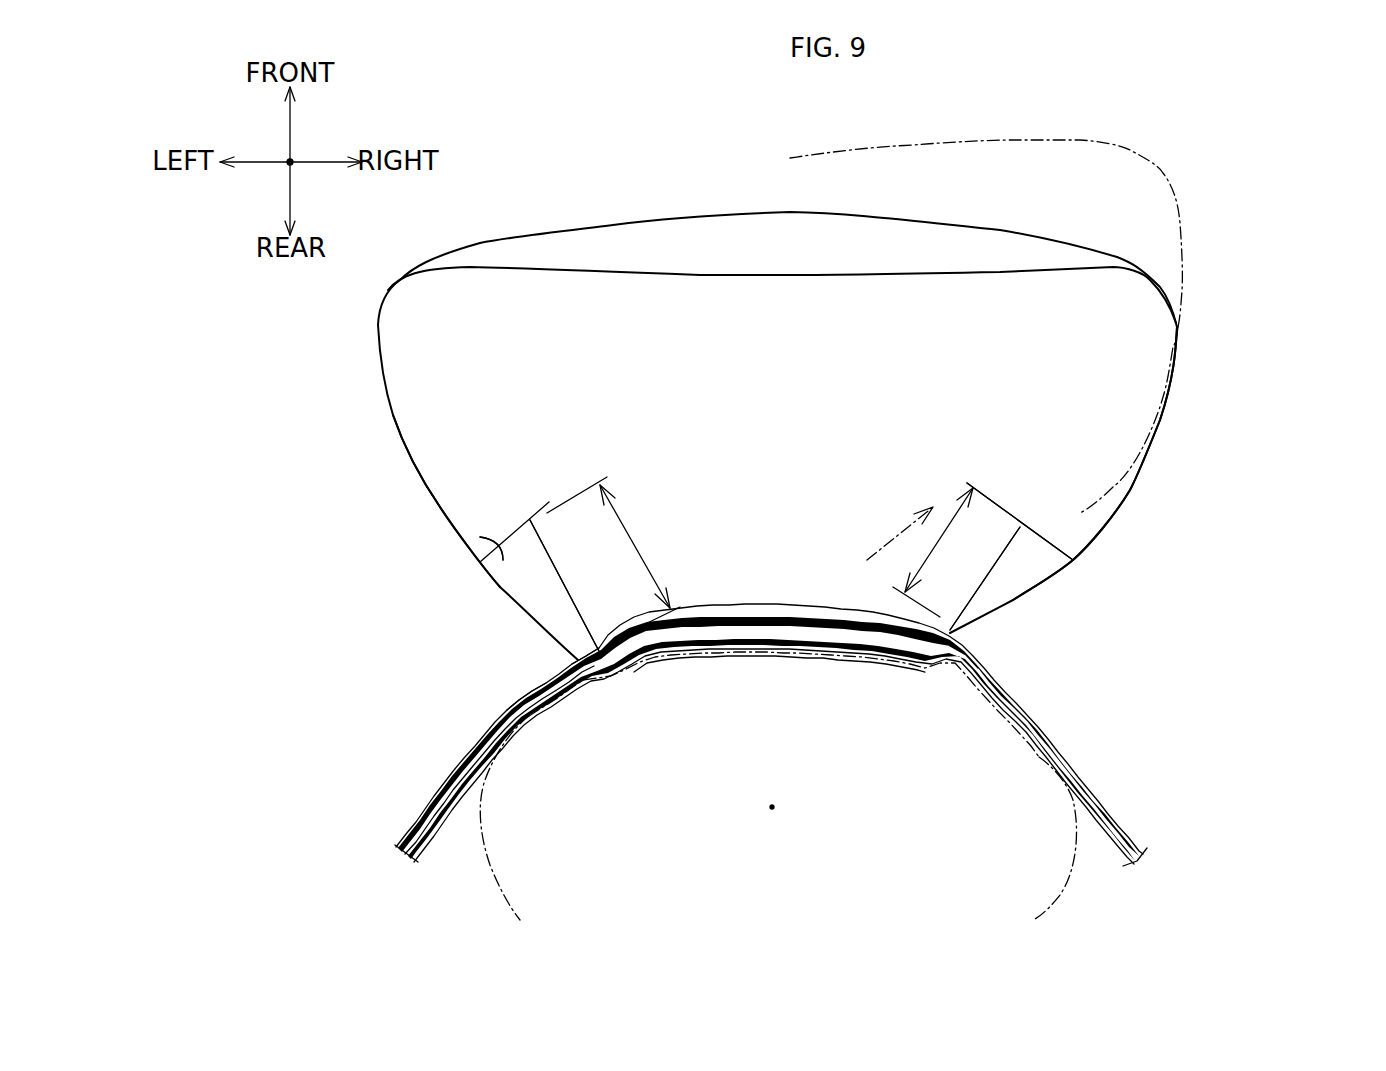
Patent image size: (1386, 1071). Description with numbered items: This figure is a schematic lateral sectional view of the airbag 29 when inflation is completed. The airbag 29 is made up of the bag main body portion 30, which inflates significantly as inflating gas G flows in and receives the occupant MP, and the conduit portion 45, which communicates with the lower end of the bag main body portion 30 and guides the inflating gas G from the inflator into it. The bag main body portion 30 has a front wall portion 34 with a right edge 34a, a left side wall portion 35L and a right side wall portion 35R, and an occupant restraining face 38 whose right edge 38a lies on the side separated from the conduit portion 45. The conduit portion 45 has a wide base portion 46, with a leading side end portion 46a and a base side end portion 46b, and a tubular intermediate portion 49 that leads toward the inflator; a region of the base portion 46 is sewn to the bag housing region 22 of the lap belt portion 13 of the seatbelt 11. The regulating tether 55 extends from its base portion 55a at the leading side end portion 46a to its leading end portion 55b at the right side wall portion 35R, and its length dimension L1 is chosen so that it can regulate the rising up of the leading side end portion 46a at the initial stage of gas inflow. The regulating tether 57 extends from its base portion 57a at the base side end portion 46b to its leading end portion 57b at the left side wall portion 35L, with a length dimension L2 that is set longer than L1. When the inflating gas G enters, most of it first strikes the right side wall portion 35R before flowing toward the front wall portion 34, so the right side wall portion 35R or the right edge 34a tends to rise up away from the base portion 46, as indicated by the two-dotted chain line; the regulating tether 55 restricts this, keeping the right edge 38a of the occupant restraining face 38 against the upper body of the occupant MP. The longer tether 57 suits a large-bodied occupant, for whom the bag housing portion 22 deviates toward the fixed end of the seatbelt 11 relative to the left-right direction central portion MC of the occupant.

The airbag 29 is at (578, 152).
The conduit portion 45 is at (700, 597).
The bag main body portion 30 is at (708, 213).
The occupant restraining face 38 is at (785, 482).
The front wall portion 34 is at (943, 217).
The right edge of the front wall portion 34a is at (1177, 167).
The right side wall portion 35R is at (1185, 284).
The left side wall portion 35L is at (367, 415).
The right edge of the occupant restraining face 38a is at (1133, 333).
The regulating tether 57 is at (540, 587).
The base portion of the regulating tether 57 57a is at (566, 658).
The leading end portion of the regulating tether 57 57b is at (487, 575).
The regulating tether 55 is at (1010, 583).
The base portion of the regulating tether 55 55a is at (957, 637).
The leading end portion of the regulating tether 55 55b is at (1050, 553).
The base portion 46 is at (712, 638).
The leading side end portion 46a is at (947, 645).
The base side end portion 46b is at (566, 658).
The bag housing portion 22 is at (810, 652).
The lap belt portion 13 is at (831, 757).
The seatbelt 11 is at (1093, 787).
The intermediate portion 49 is at (537, 723).
The length dimension of the regulating tether 55 L1 is at (933, 552).
The length dimension of the regulating tether 57 L2 is at (613, 555).
The inflating gas G is at (906, 517).
The occupant MP is at (1087, 883).
The left-right direction central portion MC is at (772, 807).